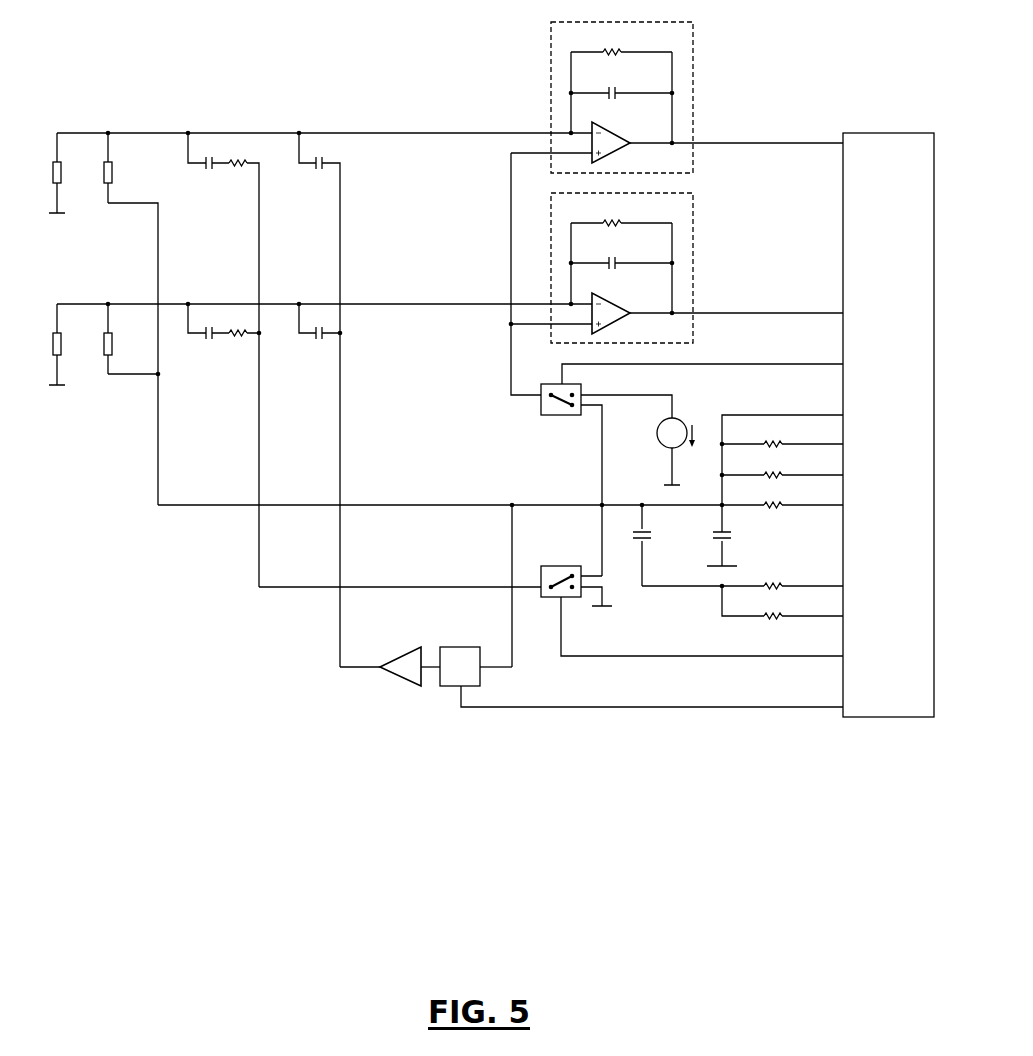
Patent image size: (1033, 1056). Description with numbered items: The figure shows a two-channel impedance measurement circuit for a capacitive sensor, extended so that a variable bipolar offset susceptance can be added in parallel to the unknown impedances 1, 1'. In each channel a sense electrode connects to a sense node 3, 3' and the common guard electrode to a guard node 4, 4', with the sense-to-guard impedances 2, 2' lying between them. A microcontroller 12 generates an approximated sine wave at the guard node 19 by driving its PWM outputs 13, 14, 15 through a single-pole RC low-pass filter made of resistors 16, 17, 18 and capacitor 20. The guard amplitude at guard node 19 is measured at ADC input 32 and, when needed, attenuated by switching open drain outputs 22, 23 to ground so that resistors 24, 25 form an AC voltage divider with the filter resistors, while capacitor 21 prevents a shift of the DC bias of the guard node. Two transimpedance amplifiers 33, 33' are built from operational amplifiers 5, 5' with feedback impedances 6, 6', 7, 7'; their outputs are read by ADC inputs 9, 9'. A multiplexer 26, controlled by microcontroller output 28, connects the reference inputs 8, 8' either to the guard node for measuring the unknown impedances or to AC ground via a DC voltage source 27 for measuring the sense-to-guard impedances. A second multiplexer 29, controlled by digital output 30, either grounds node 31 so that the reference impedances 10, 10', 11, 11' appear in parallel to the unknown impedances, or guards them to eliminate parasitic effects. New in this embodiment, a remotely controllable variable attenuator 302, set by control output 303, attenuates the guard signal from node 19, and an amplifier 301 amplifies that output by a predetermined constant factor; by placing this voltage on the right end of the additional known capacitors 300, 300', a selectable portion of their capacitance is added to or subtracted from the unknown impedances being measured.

The unknown impedance 1 is at (51, 173).
The sense-to-guard impedance 2 is at (101, 168).
The sense node 3 is at (324, 125).
The guard node 4 is at (134, 345).
The unknown impedance 1' is at (50, 344).
The sense-to-guard impedance 2' is at (100, 339).
The sense node 3' is at (324, 296).
The guard node 4' is at (133, 365).
The reference impedance 10 is at (208, 151).
The reference impedance 11 is at (245, 363).
The reference impedance 300 is at (320, 400).
The reference impedance 10' is at (208, 321).
The reference impedance 11' is at (244, 323).
The reference impedance 300' is at (319, 321).
The transimpedance amplifier 33 is at (622, 89).
The feedback impedance 7 is at (621, 87).
The feedback impedance 6 is at (622, 85).
The operational amplifier 5 is at (611, 139).
The transimpedance amplifier reference input 8 is at (551, 274).
The transimpedance amplifier 33' is at (622, 260).
The feedback impedance 7' is at (621, 257).
The feedback impedance 6' is at (622, 255).
The operational amplifier 5' is at (611, 310).
The transimpedance amplifier reference input 8' is at (550, 332).
The ADC input 9 is at (736, 136).
The ADC input 9' is at (736, 305).
The microcontroller 12 is at (888, 416).
The microcontroller output 28 is at (702, 366).
The multiplexer 26 is at (604, 472).
The DC voltage source 27 is at (670, 448).
The ADC input 32 is at (781, 465).
The resistor 16 is at (773, 436).
The PWM output 13 is at (782, 436).
The resistor 17 is at (773, 467).
The PWM output 14 is at (782, 467).
The resistor 18 is at (773, 498).
The PWM output 15 is at (782, 497).
The guard node 19 is at (440, 577).
The capacitor 21 is at (632, 545).
The capacitor 20 is at (715, 547).
The resistor 24 is at (773, 579).
The open drain output 22 is at (742, 579).
The resistor 25 is at (773, 609).
The open drain output 23 is at (782, 601).
The multiplexer 29 is at (576, 578).
The node 31 is at (400, 578).
The digital output 30 is at (702, 626).
The amplifier 301 is at (390, 665).
The remotely controllable variable attenuator 302 is at (476, 657).
The control output 303 is at (652, 696).